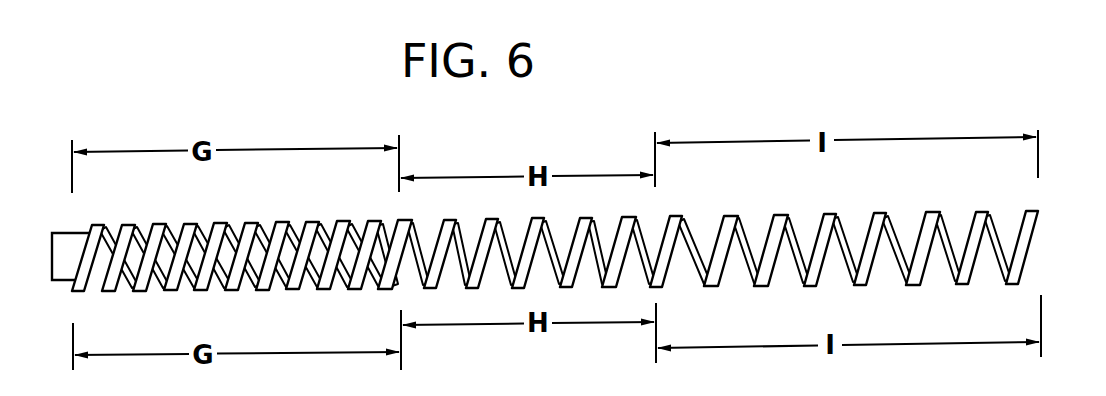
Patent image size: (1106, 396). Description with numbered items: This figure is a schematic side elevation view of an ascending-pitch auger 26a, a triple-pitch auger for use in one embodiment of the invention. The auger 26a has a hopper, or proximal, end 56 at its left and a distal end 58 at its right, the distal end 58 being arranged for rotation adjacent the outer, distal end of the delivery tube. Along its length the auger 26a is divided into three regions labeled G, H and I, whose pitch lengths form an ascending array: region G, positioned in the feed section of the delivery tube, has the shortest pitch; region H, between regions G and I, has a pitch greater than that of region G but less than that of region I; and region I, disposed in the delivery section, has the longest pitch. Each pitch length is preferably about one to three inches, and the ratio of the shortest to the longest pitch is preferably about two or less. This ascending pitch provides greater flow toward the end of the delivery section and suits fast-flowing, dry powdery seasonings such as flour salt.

The hopper (proximal) end 56 is at (72, 280).
The ascending-pitch auger 26a is at (926, 198).
The distal end 58 is at (1038, 223).